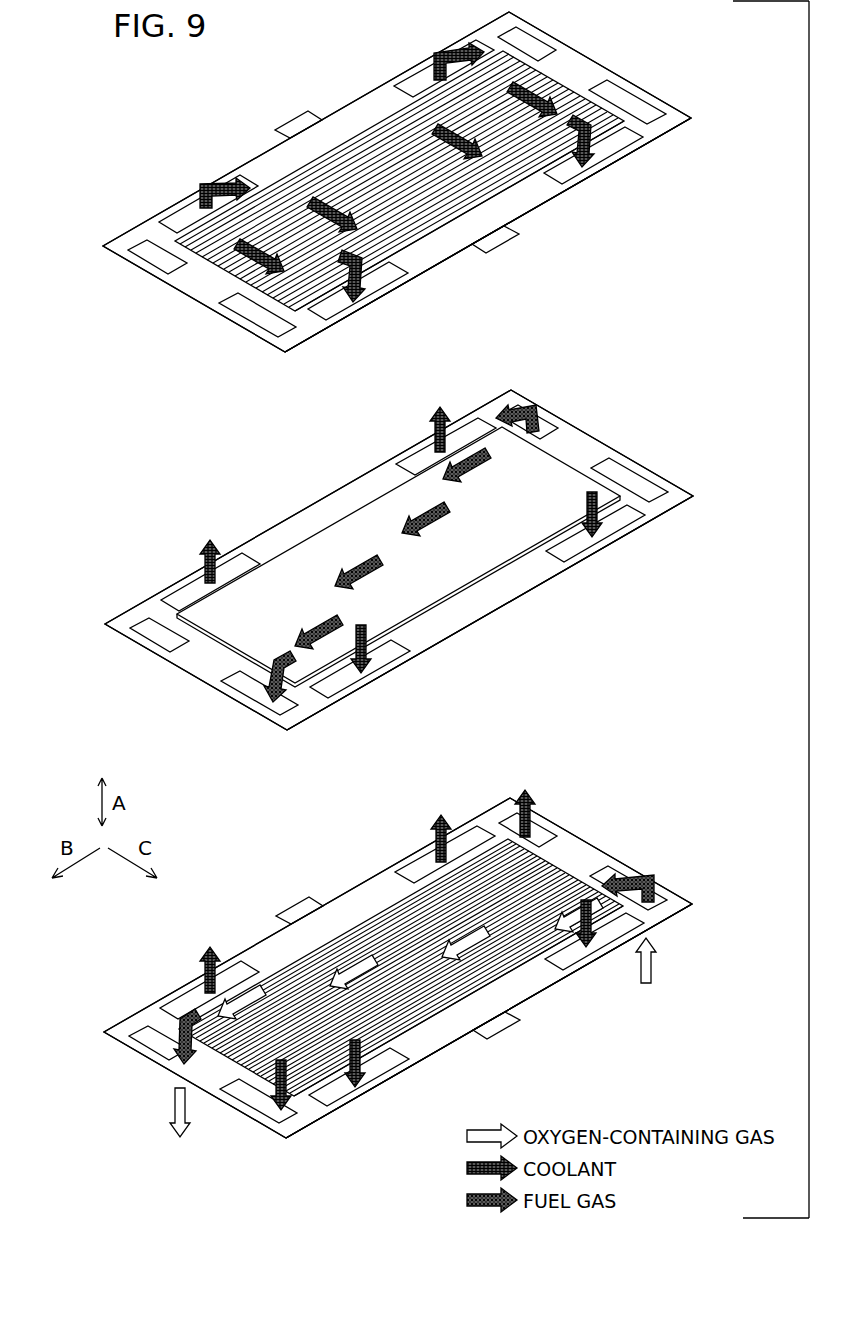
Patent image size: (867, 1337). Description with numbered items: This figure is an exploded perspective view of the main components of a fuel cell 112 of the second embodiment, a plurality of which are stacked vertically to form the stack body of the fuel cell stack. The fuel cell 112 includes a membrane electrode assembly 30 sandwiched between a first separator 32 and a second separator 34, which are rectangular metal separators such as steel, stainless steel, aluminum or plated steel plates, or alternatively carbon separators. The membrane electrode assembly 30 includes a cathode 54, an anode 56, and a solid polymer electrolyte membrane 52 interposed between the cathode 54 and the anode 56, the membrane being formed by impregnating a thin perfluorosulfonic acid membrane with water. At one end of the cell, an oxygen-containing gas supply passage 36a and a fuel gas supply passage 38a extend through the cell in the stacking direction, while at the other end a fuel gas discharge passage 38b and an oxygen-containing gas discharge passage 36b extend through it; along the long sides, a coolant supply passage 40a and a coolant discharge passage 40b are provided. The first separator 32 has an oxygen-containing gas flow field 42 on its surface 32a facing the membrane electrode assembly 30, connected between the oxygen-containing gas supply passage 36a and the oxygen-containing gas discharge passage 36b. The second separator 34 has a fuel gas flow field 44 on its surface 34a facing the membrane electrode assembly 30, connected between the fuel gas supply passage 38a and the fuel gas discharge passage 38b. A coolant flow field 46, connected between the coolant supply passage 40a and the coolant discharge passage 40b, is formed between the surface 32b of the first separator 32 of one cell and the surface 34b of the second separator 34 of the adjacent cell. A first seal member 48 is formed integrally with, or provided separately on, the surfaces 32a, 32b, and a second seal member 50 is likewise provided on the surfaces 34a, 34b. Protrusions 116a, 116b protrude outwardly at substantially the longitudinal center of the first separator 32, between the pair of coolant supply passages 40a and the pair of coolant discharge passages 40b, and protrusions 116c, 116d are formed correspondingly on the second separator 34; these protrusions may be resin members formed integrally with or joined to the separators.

The fuel cell 112 is at (175, 94).
The membrane electrode assembly 30 is at (596, 433).
The first separator 32 is at (596, 840).
The surface of the first separator 32a is at (322, 1110).
The surface of the first separator 32b is at (328, 1115).
The second separator 34 is at (596, 55).
The surface of the second separator 34a is at (463, 242).
The surface of the second separator 34b is at (425, 263).
The oxygen-containing gas supply passage 36a is at (654, 898).
The oxygen-containing gas discharge passage 36b is at (150, 1030).
The fuel gas supply passage 38a is at (542, 840).
The fuel gas discharge passage 38b is at (270, 1106).
The coolant supply passage 40a is at (415, 880).
The coolant discharge passage 40b is at (582, 958).
The oxygen-containing gas flow field 42 is at (405, 1050).
The fuel gas flow field 44 is at (408, 76).
The coolant flow field 46 is at (283, 200).
The first seal member 48 is at (689, 907).
The second seal member 50 is at (691, 126).
The solid polymer electrolyte membrane 52 is at (540, 578).
The cathode 54 is at (423, 600).
The anode 56 is at (465, 573).
The protrusion 116a is at (296, 912).
The protrusion 116b is at (508, 1036).
The protrusion 116c is at (306, 118).
The protrusion 116d is at (500, 238).